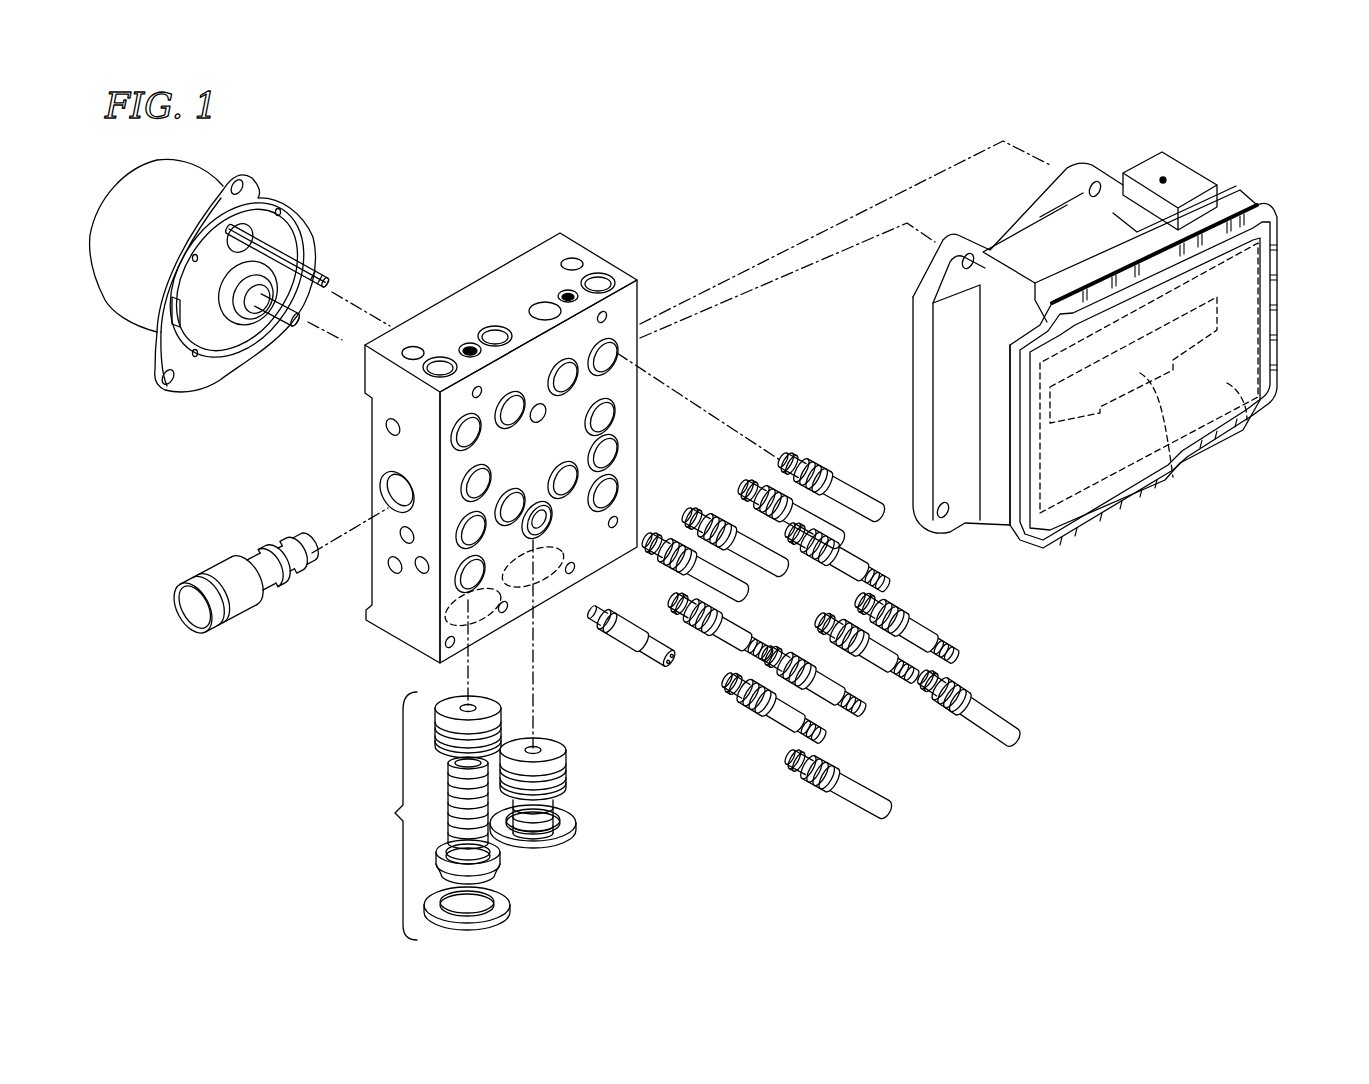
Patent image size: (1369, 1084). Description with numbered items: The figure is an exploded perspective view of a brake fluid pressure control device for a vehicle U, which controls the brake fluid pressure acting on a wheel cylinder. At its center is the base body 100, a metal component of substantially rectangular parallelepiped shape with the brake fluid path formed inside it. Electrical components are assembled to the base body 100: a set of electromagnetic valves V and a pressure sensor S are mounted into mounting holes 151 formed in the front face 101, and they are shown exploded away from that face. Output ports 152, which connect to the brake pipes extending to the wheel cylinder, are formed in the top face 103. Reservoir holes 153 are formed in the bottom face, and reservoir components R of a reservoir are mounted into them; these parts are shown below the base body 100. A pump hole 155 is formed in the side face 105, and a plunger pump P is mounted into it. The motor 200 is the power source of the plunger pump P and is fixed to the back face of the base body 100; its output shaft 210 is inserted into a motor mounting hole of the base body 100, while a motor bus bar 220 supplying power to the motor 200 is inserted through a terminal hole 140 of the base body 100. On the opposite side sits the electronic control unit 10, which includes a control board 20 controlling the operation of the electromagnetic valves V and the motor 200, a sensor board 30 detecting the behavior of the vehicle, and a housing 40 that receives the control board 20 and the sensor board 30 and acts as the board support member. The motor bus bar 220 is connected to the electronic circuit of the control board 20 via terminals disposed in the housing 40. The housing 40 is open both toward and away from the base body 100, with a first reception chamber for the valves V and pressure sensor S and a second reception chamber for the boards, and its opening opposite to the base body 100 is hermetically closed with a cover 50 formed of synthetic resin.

The electronic control unit 10 is at (1126, 330).
The control board 20 is at (1252, 424).
The sensor board 30 is at (1180, 490).
The housing 40 is at (1033, 242).
The cover 50 is at (1174, 369).
The base body 100 is at (504, 437).
The front face 101 is at (623, 390).
The top face 103 is at (530, 270).
The side face 105 is at (378, 432).
The terminal hole 140 is at (548, 416).
The mounting holes 151 is at (603, 455).
The output ports 152 is at (493, 323).
The reservoir holes 153 is at (437, 618).
The pump hole 155 is at (398, 518).
The motor 200 is at (222, 254).
The output shaft 210 is at (298, 322).
The motor bus bar 220 is at (268, 243).
The brake fluid pressure control device for a vehicle U is at (545, 188).
The plunger pump P is at (217, 557).
The pressure sensor S is at (642, 652).
The electromagnetic valves V is at (858, 500).
The reservoir components R is at (628, 773).